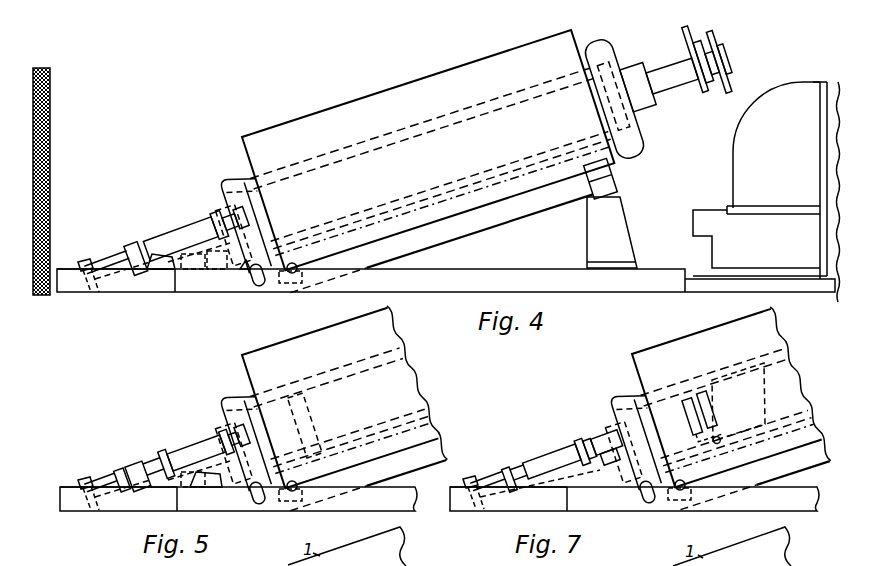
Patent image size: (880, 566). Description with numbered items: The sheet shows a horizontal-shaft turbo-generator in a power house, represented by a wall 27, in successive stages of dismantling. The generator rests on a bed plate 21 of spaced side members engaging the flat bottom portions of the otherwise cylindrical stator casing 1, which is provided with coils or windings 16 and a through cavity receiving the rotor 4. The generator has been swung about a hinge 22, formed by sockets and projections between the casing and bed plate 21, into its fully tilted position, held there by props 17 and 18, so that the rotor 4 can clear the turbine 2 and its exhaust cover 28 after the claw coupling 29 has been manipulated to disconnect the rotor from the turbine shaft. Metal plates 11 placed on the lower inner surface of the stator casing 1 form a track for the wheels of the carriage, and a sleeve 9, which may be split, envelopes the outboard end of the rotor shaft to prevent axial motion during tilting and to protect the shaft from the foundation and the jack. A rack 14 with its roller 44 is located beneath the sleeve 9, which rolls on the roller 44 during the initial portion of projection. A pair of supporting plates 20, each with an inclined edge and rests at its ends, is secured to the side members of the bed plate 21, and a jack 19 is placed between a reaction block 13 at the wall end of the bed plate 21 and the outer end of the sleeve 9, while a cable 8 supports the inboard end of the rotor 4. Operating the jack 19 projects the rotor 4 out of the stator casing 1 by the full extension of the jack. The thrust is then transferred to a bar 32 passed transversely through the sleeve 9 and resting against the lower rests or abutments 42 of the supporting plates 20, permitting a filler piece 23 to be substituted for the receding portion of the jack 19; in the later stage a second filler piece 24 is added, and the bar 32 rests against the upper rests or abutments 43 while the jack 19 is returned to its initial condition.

In FIG. 4, the stator casing 1 is at (351, 103).
In FIG. 5, the stator casing 1 is at (313, 332).
In FIG. 7, the stator casing 1 is at (684, 336).
In FIG. 4, the turbine 2 is at (836, 82).
In FIG. 4, the rotor 4 is at (423, 133).
In FIG. 5, the rotor 4 is at (348, 377).
In FIG. 7, the rotor 4 is at (764, 366).
In FIG. 4, the cables 8 is at (693, 32).
In FIG. 4, the sleeve 9 is at (202, 224).
In FIG. 5, the sleeve 9 is at (194, 444).
In FIG. 7, the sleeve 9 is at (600, 440).
In FIG. 4, the metal plates 11 is at (430, 196).
In FIG. 5, the metal plates 11 is at (358, 443).
In FIG. 7, the metal plates 11 is at (752, 440).
In FIG. 4, the reaction block 13 is at (78, 262).
In FIG. 5, the reaction block 13 is at (87, 480).
In FIG. 7, the reaction block 13 is at (475, 478).
In FIG. 4, the rack 14 is at (213, 269).
In FIG. 4, the coils or windings 16 is at (224, 171).
In FIG. 5, the coils or windings 16 is at (222, 387).
In FIG. 7, the coils or windings 16 is at (607, 388).
In FIG. 4, the prop 17 is at (588, 184).
In FIG. 5, the prop 17 is at (368, 485).
In FIG. 7, the prop 17 is at (754, 485).
In FIG. 4, the prop 18 is at (588, 235).
In FIG. 4, the jack 19 is at (118, 265).
In FIG. 5, the jack 19 is at (105, 478).
In FIG. 7, the jack 19 is at (502, 483).
In FIG. 4, the supporting plates 20 is at (163, 269).
In FIG. 5, the supporting plates 20 is at (227, 482).
In FIG. 7, the supporting plates 20 is at (578, 483).
In FIG. 4, the bed plate 21 is at (592, 287).
In FIG. 5, the bed plate 21 is at (352, 507).
In FIG. 7, the bed plate 21 is at (660, 508).
In FIG. 4, the hinge 22 is at (295, 262).
In FIG. 5, the hinge 22 is at (295, 485).
In FIG. 7, the hinge 22 is at (685, 483).
In FIG. 5, the filler piece 23 is at (132, 468).
In FIG. 7, the filler piece 23 is at (577, 443).
In FIG. 7, the second filler piece 24 is at (558, 457).
In FIG. 4, the wall 27 is at (50, 129).
In FIG. 4, the exhaust cover 28 is at (747, 127).
In FIG. 4, the claw coupling 29 is at (727, 57).
In FIG. 5, the bar 32 is at (168, 465).
In FIG. 7, the bar 32 is at (612, 460).
In FIG. 4, the lower rests or abutments 42 is at (151, 247).
In FIG. 5, the lower rests or abutments 42 is at (157, 472).
In FIG. 7, the lower rests or abutments 42 is at (513, 470).
In FIG. 5, the upper rests or abutments 43 is at (222, 447).
In FIG. 7, the upper rests or abutments 43 is at (598, 442).
In FIG. 4, the roller 44 is at (189, 269).
In FIG. 5, the roller 44 is at (197, 483).